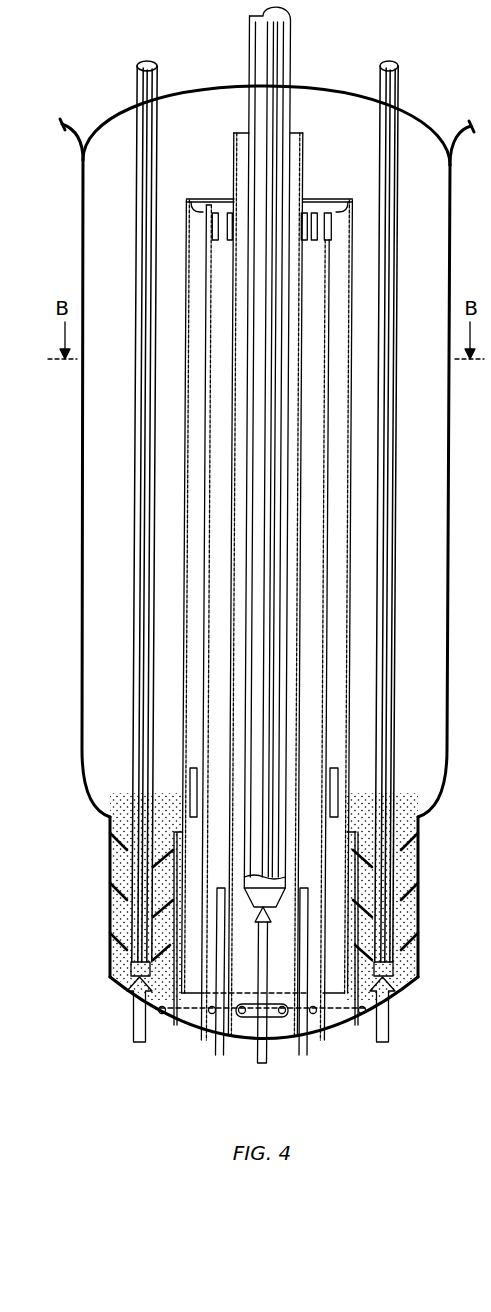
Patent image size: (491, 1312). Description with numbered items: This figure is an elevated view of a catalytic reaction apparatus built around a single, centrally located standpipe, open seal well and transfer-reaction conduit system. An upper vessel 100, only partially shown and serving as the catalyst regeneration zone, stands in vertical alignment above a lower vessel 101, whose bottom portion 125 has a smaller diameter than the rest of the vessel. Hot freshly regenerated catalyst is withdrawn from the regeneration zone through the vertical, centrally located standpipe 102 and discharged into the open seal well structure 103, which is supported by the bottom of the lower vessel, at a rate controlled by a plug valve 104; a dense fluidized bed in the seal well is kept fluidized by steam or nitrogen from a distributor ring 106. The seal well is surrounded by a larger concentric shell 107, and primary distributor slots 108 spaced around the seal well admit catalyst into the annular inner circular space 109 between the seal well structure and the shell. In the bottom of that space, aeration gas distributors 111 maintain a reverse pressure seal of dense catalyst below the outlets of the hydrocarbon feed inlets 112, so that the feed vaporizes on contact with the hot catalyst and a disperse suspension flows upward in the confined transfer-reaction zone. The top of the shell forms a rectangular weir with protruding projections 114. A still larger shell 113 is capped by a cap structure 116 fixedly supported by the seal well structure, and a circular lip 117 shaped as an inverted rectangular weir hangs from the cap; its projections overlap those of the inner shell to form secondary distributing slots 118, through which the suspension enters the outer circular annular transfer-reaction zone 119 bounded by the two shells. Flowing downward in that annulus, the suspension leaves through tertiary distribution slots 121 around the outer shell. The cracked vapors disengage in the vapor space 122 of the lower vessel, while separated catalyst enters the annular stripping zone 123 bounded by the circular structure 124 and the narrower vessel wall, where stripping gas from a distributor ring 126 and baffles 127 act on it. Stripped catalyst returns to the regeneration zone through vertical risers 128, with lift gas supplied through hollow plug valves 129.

The upper vessel 100 is at (463, 143).
The lower vessel 101 is at (452, 413).
The standpipe 102 is at (254, 34).
The open seal well structure 103 is at (235, 141).
The plug valve 104 is at (259, 1048).
The distributor ring 106 is at (282, 1018).
The concentric shell 107 is at (207, 574).
The primary distributor slots 108 is at (229, 990).
The annular inner circular space 109 is at (266, 622).
The aeration gas distributors 111 is at (310, 1032).
The hydrocarbon feed inlets 112 is at (218, 1046).
The shell 113 is at (189, 355).
The protruding projections 114 is at (227, 214).
The cap structure 116 is at (203, 200).
The circular lip 117 is at (200, 208).
The secondary distributing slots 118 is at (232, 235).
The outer circular annular transfer-reaction zone 119 is at (265, 596).
The tertiary distribution slots 121 is at (190, 777).
The vapor space 122 is at (261, 511).
The annular stripping zone 123 is at (120, 857).
The circular structure 124 is at (176, 832).
The bottom portion 125 is at (419, 907).
The distributor ring 126 is at (163, 1014).
The baffles 127 is at (113, 927).
The vertical risers 128 is at (136, 462).
The hollow plug valves 129 is at (133, 1028).